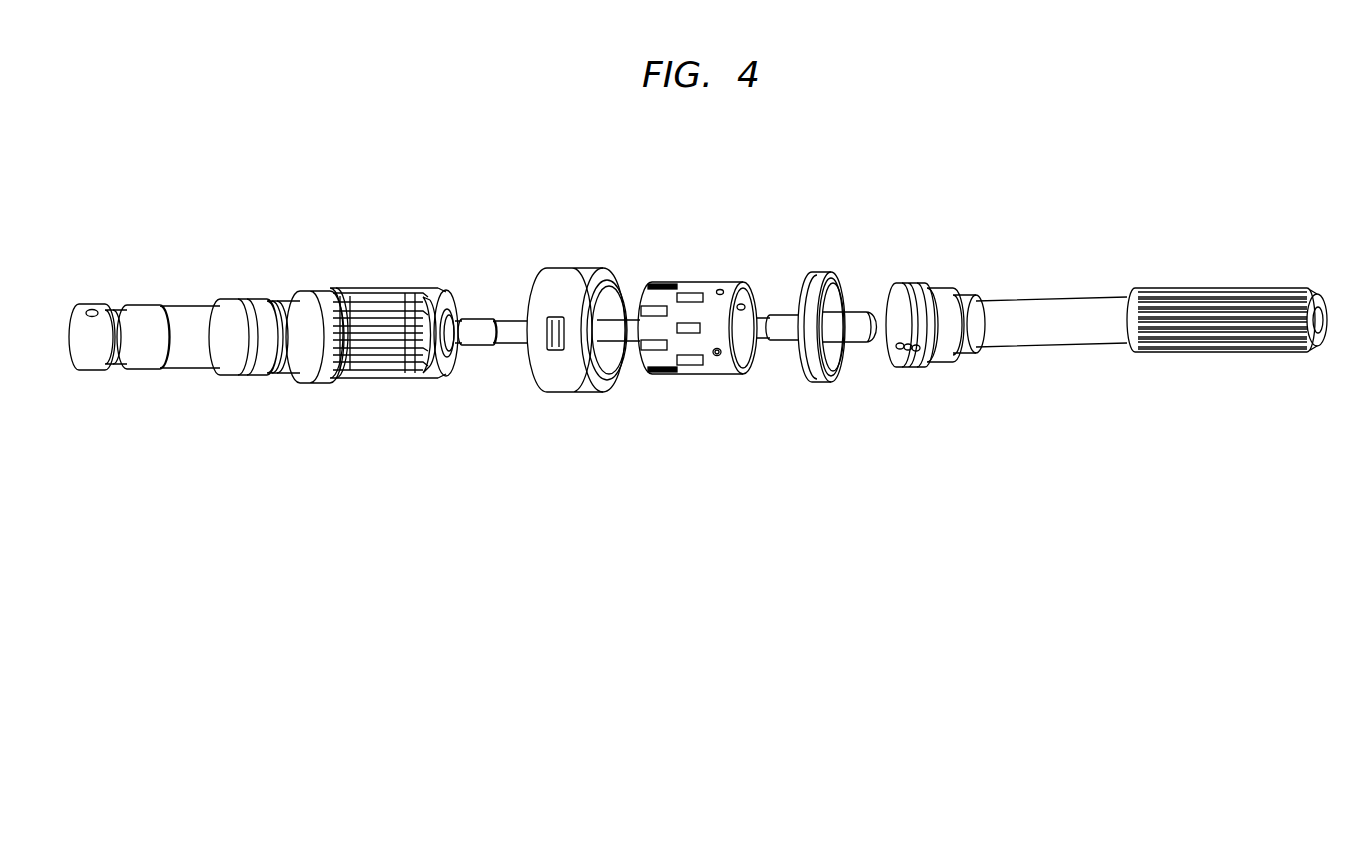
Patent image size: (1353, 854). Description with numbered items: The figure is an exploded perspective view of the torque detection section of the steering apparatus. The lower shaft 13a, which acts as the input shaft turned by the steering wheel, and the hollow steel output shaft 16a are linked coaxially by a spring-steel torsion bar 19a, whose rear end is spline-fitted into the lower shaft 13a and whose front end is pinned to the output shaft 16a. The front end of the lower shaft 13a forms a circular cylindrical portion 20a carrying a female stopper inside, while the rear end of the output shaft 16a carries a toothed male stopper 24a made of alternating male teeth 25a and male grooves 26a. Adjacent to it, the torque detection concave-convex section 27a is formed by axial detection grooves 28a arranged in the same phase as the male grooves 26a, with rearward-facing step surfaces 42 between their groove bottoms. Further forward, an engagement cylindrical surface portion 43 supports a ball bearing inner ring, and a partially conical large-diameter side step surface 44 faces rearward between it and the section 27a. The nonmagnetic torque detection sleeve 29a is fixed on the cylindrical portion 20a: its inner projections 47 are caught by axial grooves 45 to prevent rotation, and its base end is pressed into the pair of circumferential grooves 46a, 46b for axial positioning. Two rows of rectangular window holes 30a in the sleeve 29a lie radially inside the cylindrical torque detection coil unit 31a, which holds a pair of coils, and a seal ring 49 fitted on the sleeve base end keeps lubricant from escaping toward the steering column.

The lower shaft 13a is at (1103, 312).
The output shaft 16a is at (182, 323).
The torsion bar 19a is at (617, 328).
The circular cylindrical portion 20a is at (918, 341).
The male stopper 24a is at (417, 311).
The male teeth 25a is at (437, 318).
The male grooves 26a is at (452, 362).
The torque detection concave-convex section 27a is at (355, 320).
The detection grooves 28a is at (358, 372).
The torque detection sleeve 29a is at (703, 350).
The window holes 30a is at (653, 312).
The torque detection coil unit 31a is at (580, 287).
The step surfaces 42 is at (430, 370).
The engagement cylindrical surface portion 43 is at (312, 330).
The large-diameter side step surface 44 is at (340, 300).
The axial grooves 45 is at (900, 292).
The circumferential groove 46a is at (930, 368).
The circumferential groove 46b is at (907, 370).
The projections 47 is at (721, 292).
The seal ring 49 is at (817, 287).